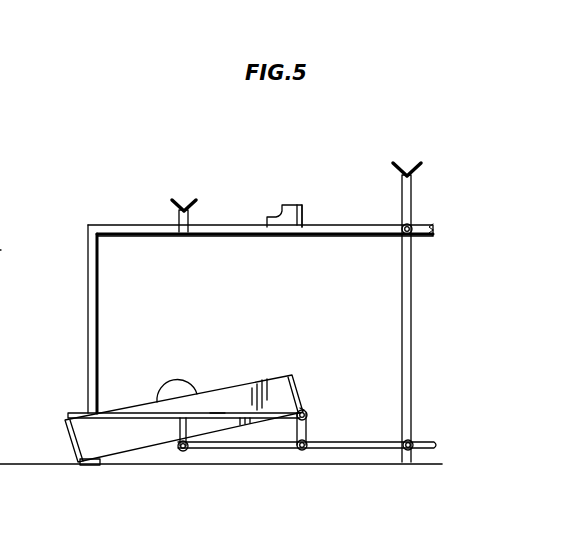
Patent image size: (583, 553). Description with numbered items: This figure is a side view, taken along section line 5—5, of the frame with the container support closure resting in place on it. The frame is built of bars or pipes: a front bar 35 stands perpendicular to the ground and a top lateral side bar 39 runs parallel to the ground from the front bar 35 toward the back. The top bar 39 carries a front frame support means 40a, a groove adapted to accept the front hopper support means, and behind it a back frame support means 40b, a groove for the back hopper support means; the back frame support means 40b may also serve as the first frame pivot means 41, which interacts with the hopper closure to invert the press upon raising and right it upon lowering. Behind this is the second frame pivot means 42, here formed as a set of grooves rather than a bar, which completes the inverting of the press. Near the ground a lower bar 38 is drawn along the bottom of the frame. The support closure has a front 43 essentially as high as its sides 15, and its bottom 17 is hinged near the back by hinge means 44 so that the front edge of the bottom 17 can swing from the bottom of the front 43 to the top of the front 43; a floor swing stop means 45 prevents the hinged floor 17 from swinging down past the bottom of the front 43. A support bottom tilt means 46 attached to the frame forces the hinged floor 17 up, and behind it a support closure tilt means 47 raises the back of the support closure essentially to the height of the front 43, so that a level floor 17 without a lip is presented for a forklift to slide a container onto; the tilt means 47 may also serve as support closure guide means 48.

The section line 5— 5 is at (5, 251).
The sides 15 is at (273, 386).
The bottom 17 is at (217, 412).
The front bars 35 is at (88, 292).
The lower rail 38 is at (381, 440).
The top lateral side bars 39 is at (137, 226).
The front frame support means 40a is at (185, 208).
The back frame support means 40b is at (269, 216).
The first frame pivot means 41 is at (300, 205).
The second frame pivot means 42 is at (405, 173).
The front 43 is at (64, 441).
The hinge means 44 is at (305, 402).
The floor swing stop means 45 is at (80, 466).
The support bottom tilt means 46 is at (180, 430).
The support closure tilt means 47 is at (307, 428).
The support closure guide means 48 is at (303, 410).